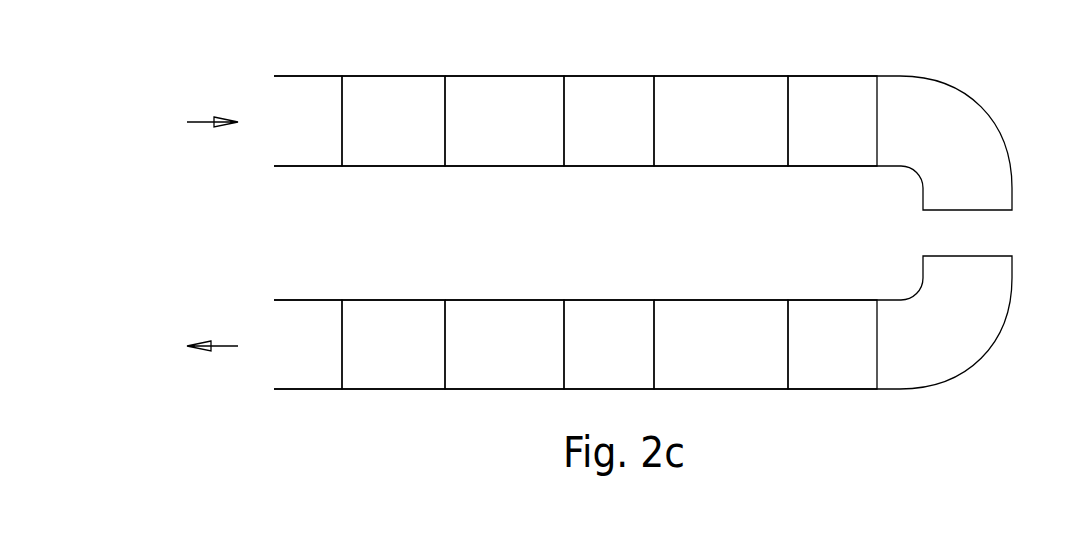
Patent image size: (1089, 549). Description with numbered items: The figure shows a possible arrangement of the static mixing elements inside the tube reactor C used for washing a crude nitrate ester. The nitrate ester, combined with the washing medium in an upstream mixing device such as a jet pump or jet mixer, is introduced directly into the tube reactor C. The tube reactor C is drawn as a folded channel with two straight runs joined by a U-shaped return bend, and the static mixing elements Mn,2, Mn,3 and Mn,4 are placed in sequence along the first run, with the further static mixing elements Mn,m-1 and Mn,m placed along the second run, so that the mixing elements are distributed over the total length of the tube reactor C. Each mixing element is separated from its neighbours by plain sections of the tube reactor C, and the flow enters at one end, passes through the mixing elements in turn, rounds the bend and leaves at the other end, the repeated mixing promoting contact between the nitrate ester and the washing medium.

The tube reactor C is at (531, 232).
The static mixing element Mn,2 is at (393, 121).
The static mixing element Mn,3 is at (609, 121).
The static mixing element Mn,4 is at (832, 121).
The static mixing element Mn,m is at (609, 344).
The static mixing element Mn,m-1 is at (832, 344).